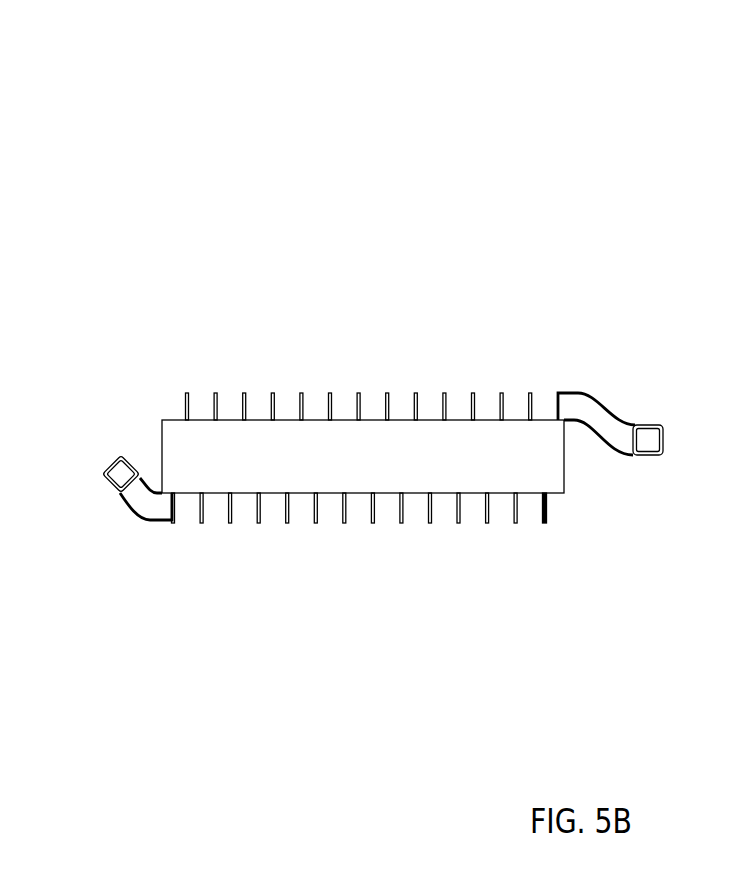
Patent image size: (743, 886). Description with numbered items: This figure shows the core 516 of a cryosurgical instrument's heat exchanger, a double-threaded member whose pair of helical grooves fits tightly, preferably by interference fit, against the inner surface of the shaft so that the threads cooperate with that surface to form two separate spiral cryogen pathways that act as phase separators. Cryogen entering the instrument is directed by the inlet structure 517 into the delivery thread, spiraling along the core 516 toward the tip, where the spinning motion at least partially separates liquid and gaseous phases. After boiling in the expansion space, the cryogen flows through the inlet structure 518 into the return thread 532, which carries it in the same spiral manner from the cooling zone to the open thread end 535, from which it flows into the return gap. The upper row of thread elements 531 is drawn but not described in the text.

The core 516 is at (321, 150).
The inlet structure 517 is at (648, 440).
The inlet structure 518 is at (117, 493).
The upper row of contact pins 531 is at (162, 405).
The return thread 532 is at (360, 508).
The open thread end 535 is at (557, 510).